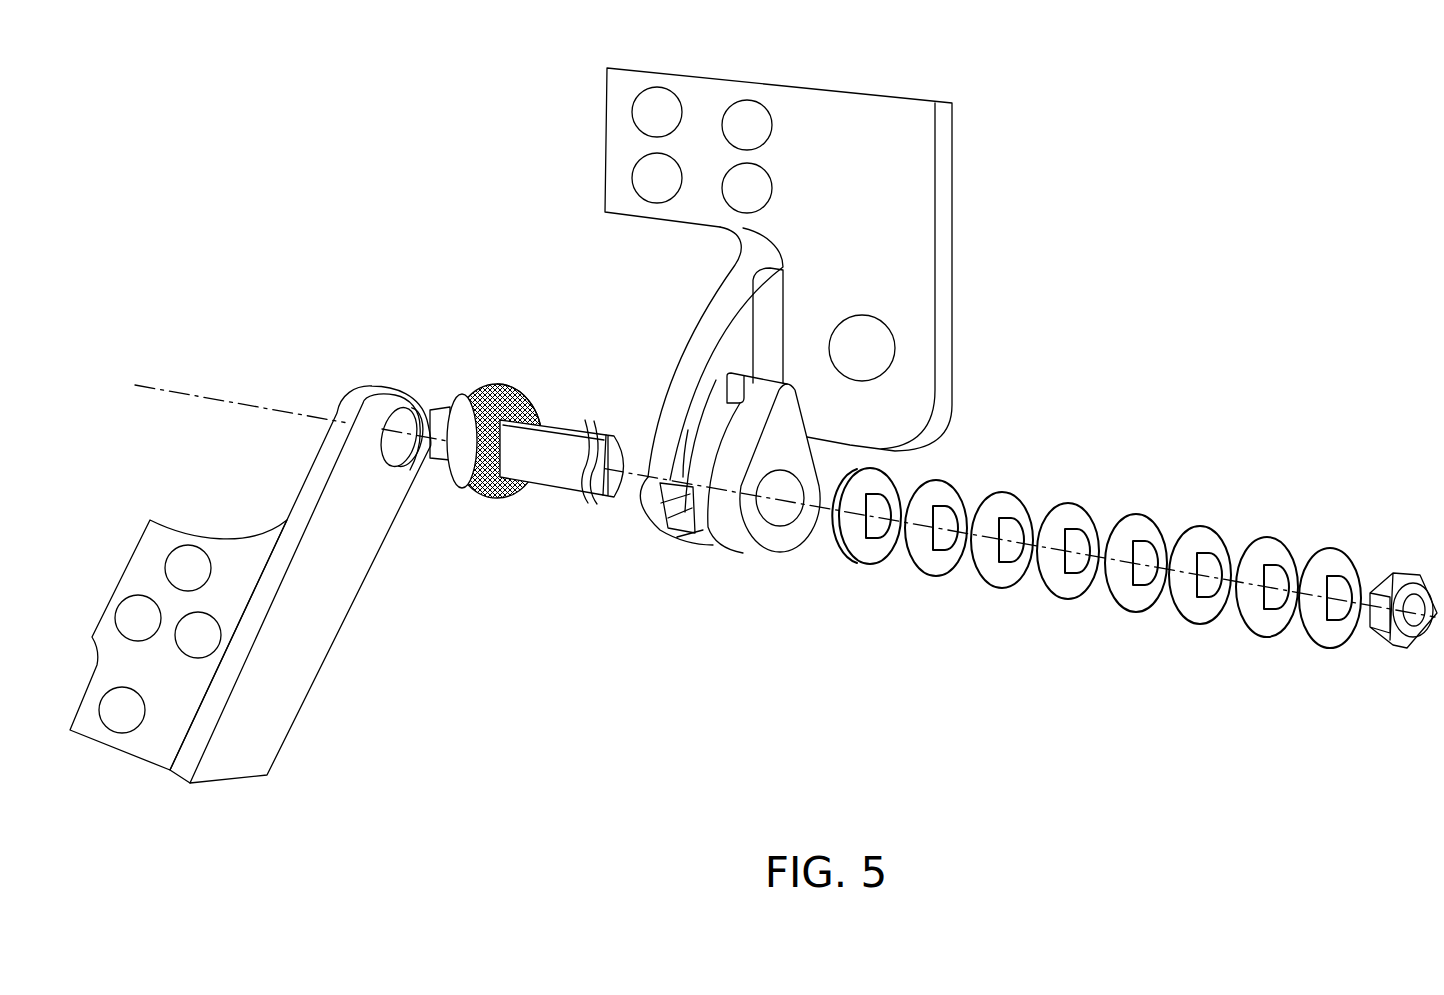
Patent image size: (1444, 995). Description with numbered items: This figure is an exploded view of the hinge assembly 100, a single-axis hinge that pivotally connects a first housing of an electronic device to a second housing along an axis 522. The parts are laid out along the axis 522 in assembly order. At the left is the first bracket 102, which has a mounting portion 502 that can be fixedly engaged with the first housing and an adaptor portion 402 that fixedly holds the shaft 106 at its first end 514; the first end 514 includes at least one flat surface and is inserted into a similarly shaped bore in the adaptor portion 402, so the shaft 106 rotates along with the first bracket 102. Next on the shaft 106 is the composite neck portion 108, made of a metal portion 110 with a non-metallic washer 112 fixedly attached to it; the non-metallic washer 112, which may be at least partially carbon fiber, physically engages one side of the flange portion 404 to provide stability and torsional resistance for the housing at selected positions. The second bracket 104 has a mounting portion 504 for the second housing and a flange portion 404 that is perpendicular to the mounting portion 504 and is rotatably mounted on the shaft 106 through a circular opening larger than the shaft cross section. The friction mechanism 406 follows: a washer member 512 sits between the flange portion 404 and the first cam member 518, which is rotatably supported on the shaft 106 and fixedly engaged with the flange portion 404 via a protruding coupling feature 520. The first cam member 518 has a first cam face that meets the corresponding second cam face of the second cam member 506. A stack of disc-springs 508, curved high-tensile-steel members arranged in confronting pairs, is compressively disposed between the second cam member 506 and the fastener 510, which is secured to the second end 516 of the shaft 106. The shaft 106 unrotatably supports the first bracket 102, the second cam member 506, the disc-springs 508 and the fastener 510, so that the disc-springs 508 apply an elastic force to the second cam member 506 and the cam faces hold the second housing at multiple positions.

The hinge assembly 100 is at (957, 808).
The first bracket 102 is at (268, 584).
The second bracket 104 is at (863, 318).
The shaft 106 is at (556, 508).
The composite neck portion 108 is at (492, 450).
The metal portion 110 is at (481, 390).
The non-metallic washer 112 is at (507, 386).
The adaptor portion 402 is at (314, 467).
The flange portion 404 is at (680, 537).
The friction mechanism 406 is at (1109, 588).
The mounting portion 502 is at (140, 540).
The mounting portion 504 is at (757, 84).
The second cam member 506 is at (872, 545).
The disc-spring 508 is at (1097, 545).
The fastener 510 is at (1394, 573).
The washer member 512 is at (705, 543).
The first end 514 is at (436, 405).
The second end 516 is at (628, 432).
The first cam member 518 is at (743, 547).
The coupling feature 520 is at (729, 378).
The axis 522 is at (190, 385).